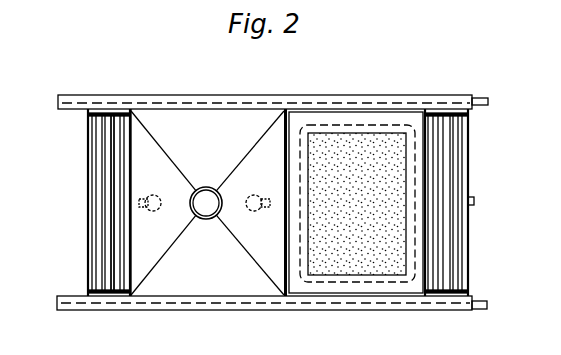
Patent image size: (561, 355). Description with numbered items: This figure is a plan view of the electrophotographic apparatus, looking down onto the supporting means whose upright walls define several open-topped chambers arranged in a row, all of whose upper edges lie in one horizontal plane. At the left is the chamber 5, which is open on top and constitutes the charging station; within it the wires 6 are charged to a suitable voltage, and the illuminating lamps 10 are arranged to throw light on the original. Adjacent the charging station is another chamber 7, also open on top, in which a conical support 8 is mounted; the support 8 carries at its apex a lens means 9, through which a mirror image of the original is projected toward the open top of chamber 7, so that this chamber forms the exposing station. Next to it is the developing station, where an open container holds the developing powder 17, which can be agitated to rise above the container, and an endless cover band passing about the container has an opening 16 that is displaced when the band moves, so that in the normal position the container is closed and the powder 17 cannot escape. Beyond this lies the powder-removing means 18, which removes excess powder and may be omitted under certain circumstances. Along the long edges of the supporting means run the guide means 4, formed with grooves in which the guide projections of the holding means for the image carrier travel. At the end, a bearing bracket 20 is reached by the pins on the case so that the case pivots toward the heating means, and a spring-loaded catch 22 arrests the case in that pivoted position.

The guide means 4 is at (192, 105).
The chamber 5 is at (93, 182).
The wires 6 is at (112, 225).
The chamber 7 is at (178, 273).
The conical support 8 is at (255, 265).
The lens means 9 is at (206, 195).
The illuminating lamps 10 is at (158, 211).
The opening 16 is at (332, 127).
The developing powder 17 is at (379, 146).
The powder-removing means 18 is at (462, 147).
The bearing bracket 20 is at (477, 303).
The spring-loaded catch 22 is at (474, 201).